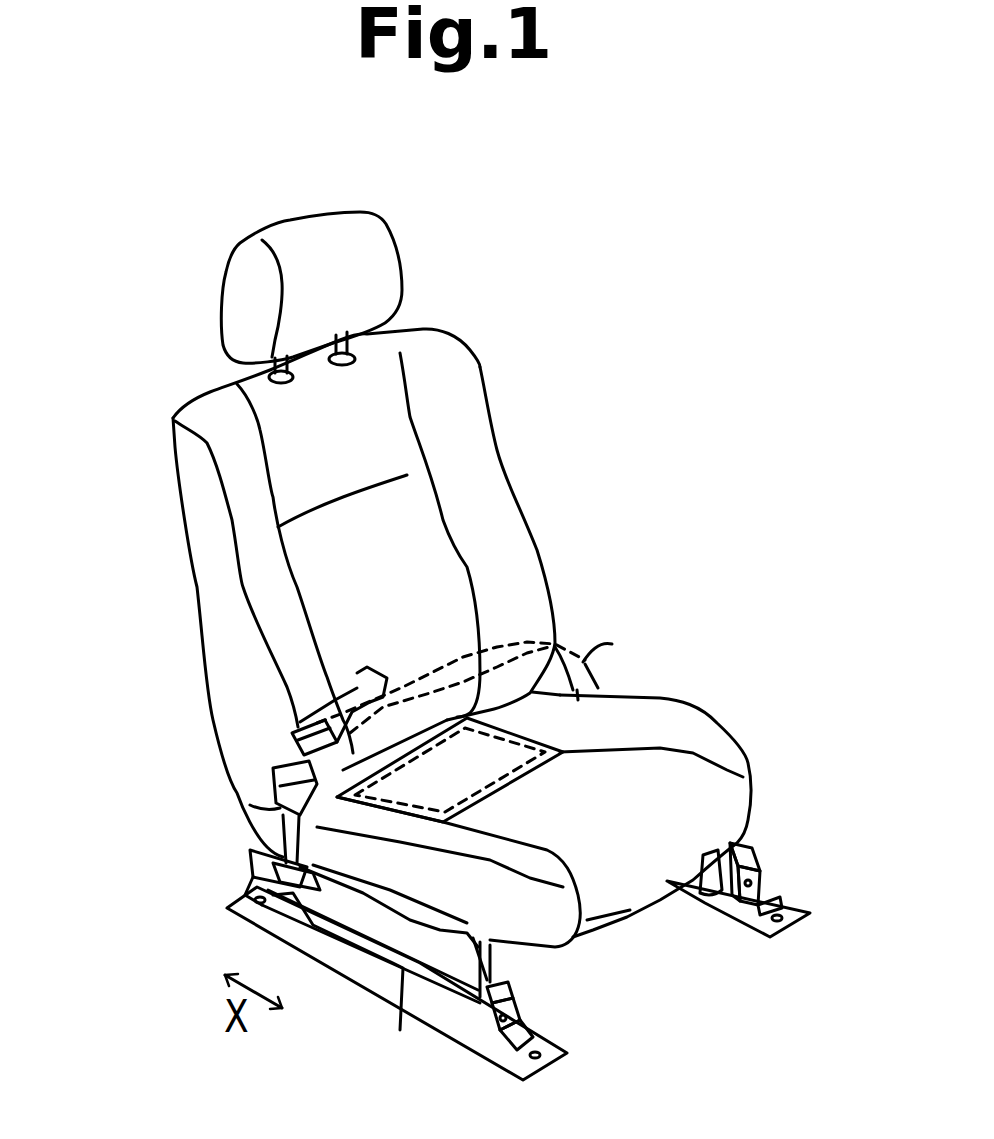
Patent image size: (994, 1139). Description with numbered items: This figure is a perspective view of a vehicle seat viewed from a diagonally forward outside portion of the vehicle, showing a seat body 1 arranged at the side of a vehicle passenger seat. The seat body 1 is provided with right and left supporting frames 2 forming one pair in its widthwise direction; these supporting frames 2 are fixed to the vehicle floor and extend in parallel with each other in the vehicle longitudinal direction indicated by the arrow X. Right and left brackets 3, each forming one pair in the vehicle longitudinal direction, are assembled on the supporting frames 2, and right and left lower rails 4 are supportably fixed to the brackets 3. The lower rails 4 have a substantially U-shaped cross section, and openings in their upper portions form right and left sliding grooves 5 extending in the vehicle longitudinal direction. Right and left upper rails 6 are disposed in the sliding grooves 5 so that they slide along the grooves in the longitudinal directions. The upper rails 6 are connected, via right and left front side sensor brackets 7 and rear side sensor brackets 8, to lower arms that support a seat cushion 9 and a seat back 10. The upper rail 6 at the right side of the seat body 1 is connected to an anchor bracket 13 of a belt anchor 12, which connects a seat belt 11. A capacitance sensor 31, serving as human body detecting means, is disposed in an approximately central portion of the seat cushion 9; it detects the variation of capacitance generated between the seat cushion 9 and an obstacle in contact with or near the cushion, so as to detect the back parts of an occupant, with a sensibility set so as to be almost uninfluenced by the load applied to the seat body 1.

The seat body 1 is at (659, 408).
The supporting frames 2 is at (480, 1052).
The brackets 3 is at (257, 928).
The lower rails 4 is at (403, 970).
The sliding grooves 5 is at (503, 977).
The upper rails 6 is at (367, 920).
The front side sensor brackets 7 is at (480, 942).
The rear side sensor brackets 8 is at (313, 868).
The seat cushion 9 is at (713, 733).
The seat back 10 is at (193, 497).
The seat belt 11 is at (612, 644).
The belt anchor 12 is at (273, 772).
The anchor bracket 13 is at (265, 822).
The capacitance sensor 31 is at (530, 783).